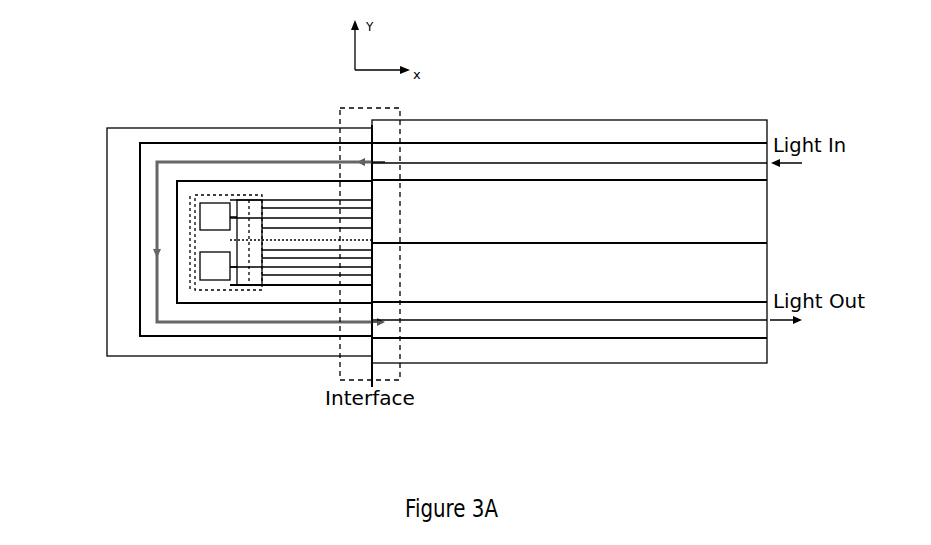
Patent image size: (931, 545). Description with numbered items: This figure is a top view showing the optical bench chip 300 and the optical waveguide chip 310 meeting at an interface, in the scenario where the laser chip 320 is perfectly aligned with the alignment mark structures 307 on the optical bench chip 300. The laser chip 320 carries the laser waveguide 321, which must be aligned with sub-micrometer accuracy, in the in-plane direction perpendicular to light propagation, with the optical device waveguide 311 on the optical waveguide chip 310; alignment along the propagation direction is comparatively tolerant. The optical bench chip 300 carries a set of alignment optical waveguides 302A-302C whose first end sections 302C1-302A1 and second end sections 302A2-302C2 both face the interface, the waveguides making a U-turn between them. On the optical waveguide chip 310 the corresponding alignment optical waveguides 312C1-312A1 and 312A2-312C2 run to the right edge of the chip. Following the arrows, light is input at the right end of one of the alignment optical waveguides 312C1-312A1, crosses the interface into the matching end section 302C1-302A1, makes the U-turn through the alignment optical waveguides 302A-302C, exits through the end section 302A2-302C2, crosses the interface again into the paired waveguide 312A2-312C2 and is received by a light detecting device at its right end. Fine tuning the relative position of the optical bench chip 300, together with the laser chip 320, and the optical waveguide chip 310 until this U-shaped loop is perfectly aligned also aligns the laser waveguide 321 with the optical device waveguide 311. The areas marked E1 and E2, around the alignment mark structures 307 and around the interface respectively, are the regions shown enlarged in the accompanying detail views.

The optical bench chip 300 is at (123, 192).
The alignment optical waveguides 302A-302C is at (177, 226).
The first end sections of the alignment optical waveguides 302C1-302A1 is at (302, 181).
The second end sections of the alignment optical waveguides 302A2-302C2 is at (208, 300).
The alignment mark structures 307 is at (232, 242).
The laser chip 320 is at (252, 276).
The laser waveguide 321 is at (263, 243).
The enlarged area E1 is at (202, 192).
The enlarged area E2 is at (370, 232).
The optical waveguide chip 310 is at (607, 133).
The optical device waveguide 311 is at (690, 243).
The first alignment optical waveguides of the optical waveguide chip 312C1-312A1 is at (520, 112).
The second alignment optical waveguides of the optical waveguide chip 312A2-312C2 is at (497, 300).